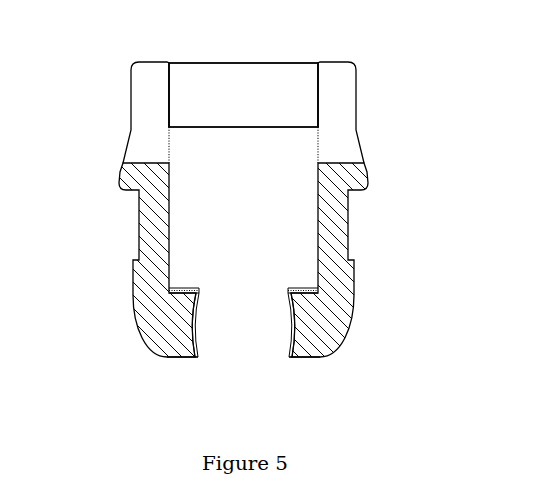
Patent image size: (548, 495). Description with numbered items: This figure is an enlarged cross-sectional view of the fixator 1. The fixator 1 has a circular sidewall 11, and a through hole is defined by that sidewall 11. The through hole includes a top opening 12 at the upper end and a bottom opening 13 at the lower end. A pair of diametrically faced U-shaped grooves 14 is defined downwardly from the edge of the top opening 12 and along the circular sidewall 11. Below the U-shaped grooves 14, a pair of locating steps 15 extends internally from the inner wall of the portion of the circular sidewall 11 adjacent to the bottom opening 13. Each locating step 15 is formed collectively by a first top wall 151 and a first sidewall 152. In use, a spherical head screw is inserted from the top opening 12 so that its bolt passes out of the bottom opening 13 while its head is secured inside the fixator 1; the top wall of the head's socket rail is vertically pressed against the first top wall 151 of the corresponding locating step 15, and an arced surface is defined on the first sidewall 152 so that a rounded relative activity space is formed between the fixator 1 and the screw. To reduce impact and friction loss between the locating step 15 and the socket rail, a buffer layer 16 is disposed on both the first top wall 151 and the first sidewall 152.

The fixator 1 is at (274, 218).
The circular sidewall 11 is at (152, 223).
The top opening 12 is at (227, 95).
The bottom opening 13 is at (237, 342).
The U-shaped grooves 14 is at (147, 130).
The locating steps 15 is at (182, 302).
The first top wall 151 is at (310, 290).
The buffer layer 16 is at (188, 322).
The first sidewall 152 is at (300, 327).